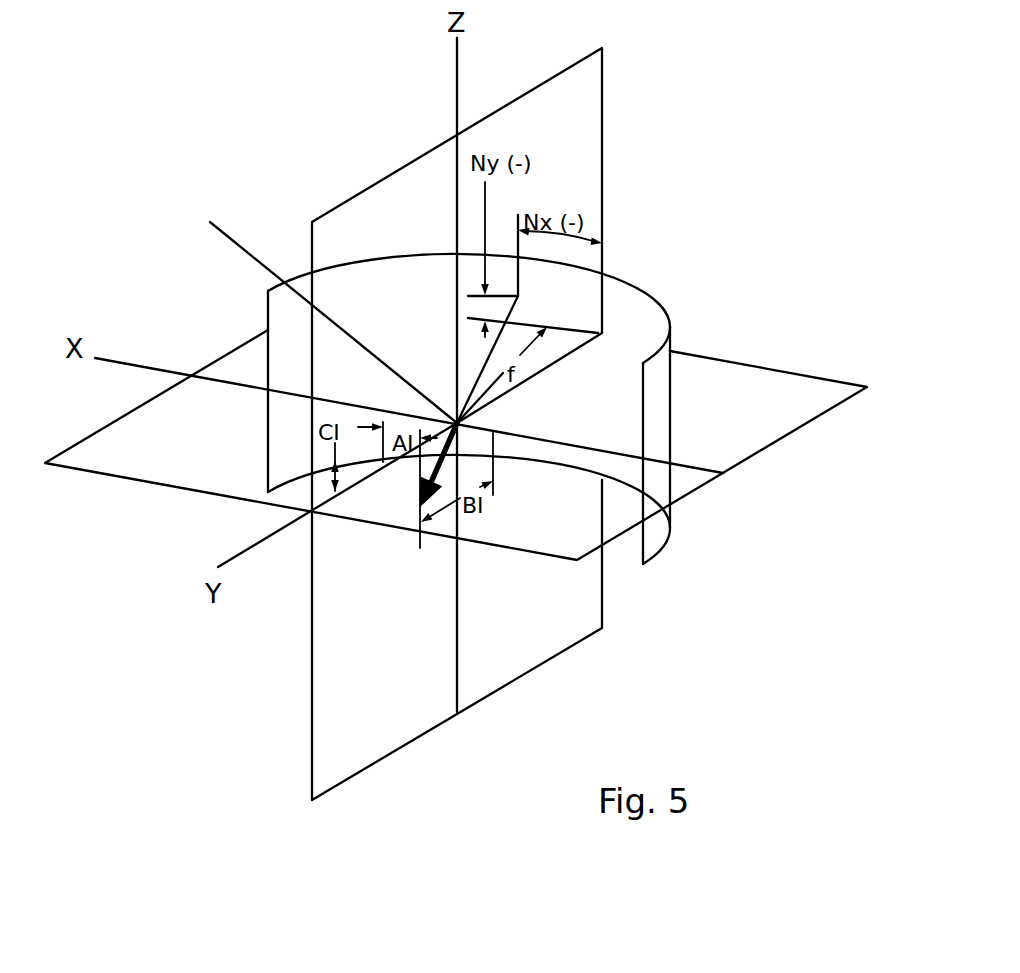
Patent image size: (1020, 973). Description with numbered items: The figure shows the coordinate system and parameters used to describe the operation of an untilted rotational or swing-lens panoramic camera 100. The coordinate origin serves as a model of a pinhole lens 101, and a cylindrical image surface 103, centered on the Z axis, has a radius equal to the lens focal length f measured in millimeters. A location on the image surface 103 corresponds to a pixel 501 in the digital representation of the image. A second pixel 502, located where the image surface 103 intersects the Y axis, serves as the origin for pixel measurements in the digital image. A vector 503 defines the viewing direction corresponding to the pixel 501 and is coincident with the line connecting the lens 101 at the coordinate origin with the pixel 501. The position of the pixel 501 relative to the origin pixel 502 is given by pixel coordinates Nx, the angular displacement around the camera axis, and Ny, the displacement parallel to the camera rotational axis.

The panoramic camera 100 is at (778, 150).
The pinhole lens 101 is at (311, 307).
The cylindrical image surface 103 is at (643, 328).
The pixel 501 is at (518, 296).
The origin pixel 502 is at (602, 333).
The viewing direction vector 503 is at (438, 472).